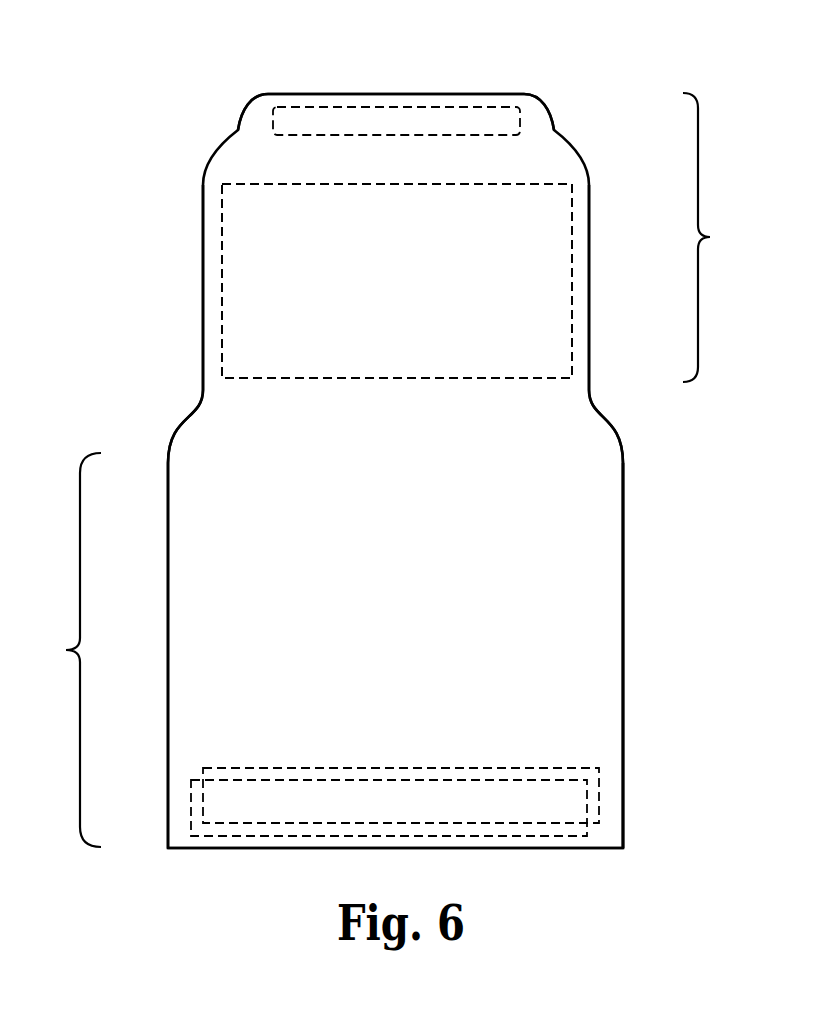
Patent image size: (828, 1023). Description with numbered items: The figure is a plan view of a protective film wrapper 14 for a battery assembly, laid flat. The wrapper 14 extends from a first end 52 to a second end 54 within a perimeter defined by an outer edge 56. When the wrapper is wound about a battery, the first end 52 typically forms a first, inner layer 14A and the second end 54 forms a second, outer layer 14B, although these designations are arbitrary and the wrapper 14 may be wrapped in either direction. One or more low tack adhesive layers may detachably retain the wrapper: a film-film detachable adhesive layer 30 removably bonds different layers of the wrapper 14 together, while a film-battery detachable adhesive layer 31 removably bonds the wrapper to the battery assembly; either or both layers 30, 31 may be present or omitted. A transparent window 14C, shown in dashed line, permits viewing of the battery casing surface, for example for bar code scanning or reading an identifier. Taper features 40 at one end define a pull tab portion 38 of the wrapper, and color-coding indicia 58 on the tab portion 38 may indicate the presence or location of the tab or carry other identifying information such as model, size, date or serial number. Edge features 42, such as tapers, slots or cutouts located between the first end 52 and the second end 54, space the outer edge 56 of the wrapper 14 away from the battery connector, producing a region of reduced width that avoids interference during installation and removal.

The protective film wrapper 14 is at (119, 80).
The first (inner) layer 14A is at (612, 697).
The second (outer) layer 14B is at (212, 292).
The transparent window 14C is at (571, 252).
The film-film detachable adhesive layer 30 is at (191, 805).
The film-battery detachable adhesive layer 31 is at (203, 770).
The pull tab portion 38 is at (423, 94).
The taper features 40 is at (237, 131).
The edge features 42 is at (200, 395).
The first end 52 is at (69, 650).
The second end 54 is at (709, 237).
The outer edge 56 is at (624, 545).
The color-coding indicia 58 is at (479, 107).